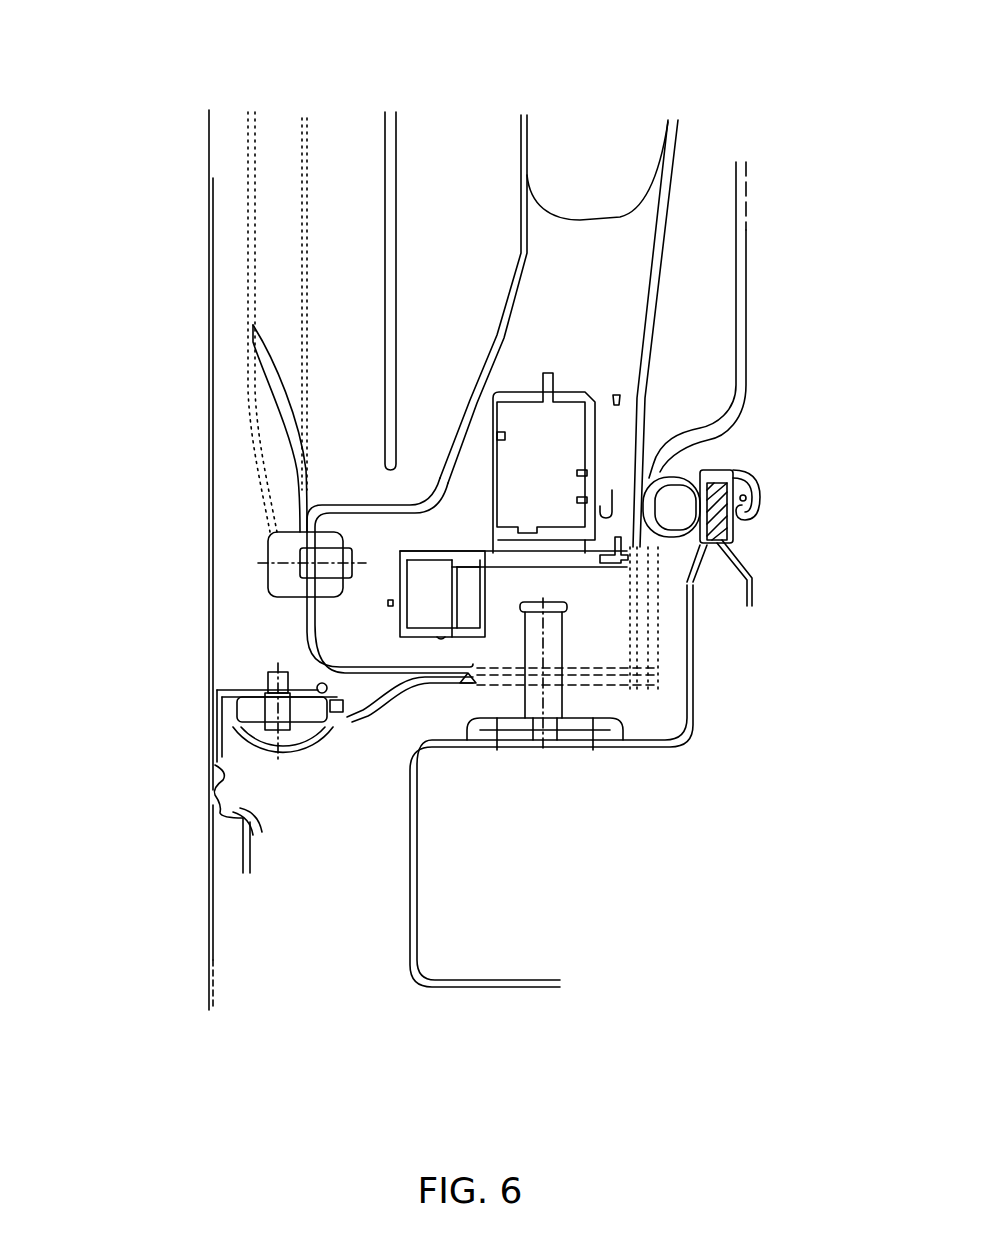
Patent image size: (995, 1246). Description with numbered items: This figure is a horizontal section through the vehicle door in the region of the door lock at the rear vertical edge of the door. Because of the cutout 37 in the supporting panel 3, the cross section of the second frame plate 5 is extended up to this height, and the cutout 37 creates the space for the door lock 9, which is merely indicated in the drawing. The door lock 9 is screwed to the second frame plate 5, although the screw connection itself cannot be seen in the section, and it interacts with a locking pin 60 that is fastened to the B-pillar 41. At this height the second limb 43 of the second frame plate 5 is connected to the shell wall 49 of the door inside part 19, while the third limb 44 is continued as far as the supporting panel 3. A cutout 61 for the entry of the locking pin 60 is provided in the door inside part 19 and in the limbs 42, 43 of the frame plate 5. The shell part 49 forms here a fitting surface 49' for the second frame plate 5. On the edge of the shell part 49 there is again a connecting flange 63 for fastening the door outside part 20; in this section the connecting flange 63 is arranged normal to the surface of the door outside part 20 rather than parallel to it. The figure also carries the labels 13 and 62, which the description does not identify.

The supporting panel 3 is at (600, 162).
The second frame plate 5 is at (320, 657).
The door lock 9 is at (563, 435).
The sealing strip 13 is at (278, 398).
The door inside part 19 is at (741, 193).
The door outside part 20 is at (194, 292).
The cutout 37 is at (586, 220).
The B-pillar 41 is at (551, 786).
The limb 42 is at (643, 382).
The second limb 43 is at (389, 668).
The third limb 44 is at (310, 600).
The shell wall 49 is at (533, 745).
The fitting surface 49' is at (526, 744).
The locking pin 60 is at (539, 632).
The cutout 61 is at (633, 658).
The carrier arm 62 is at (482, 362).
The connecting flange 63 is at (242, 712).